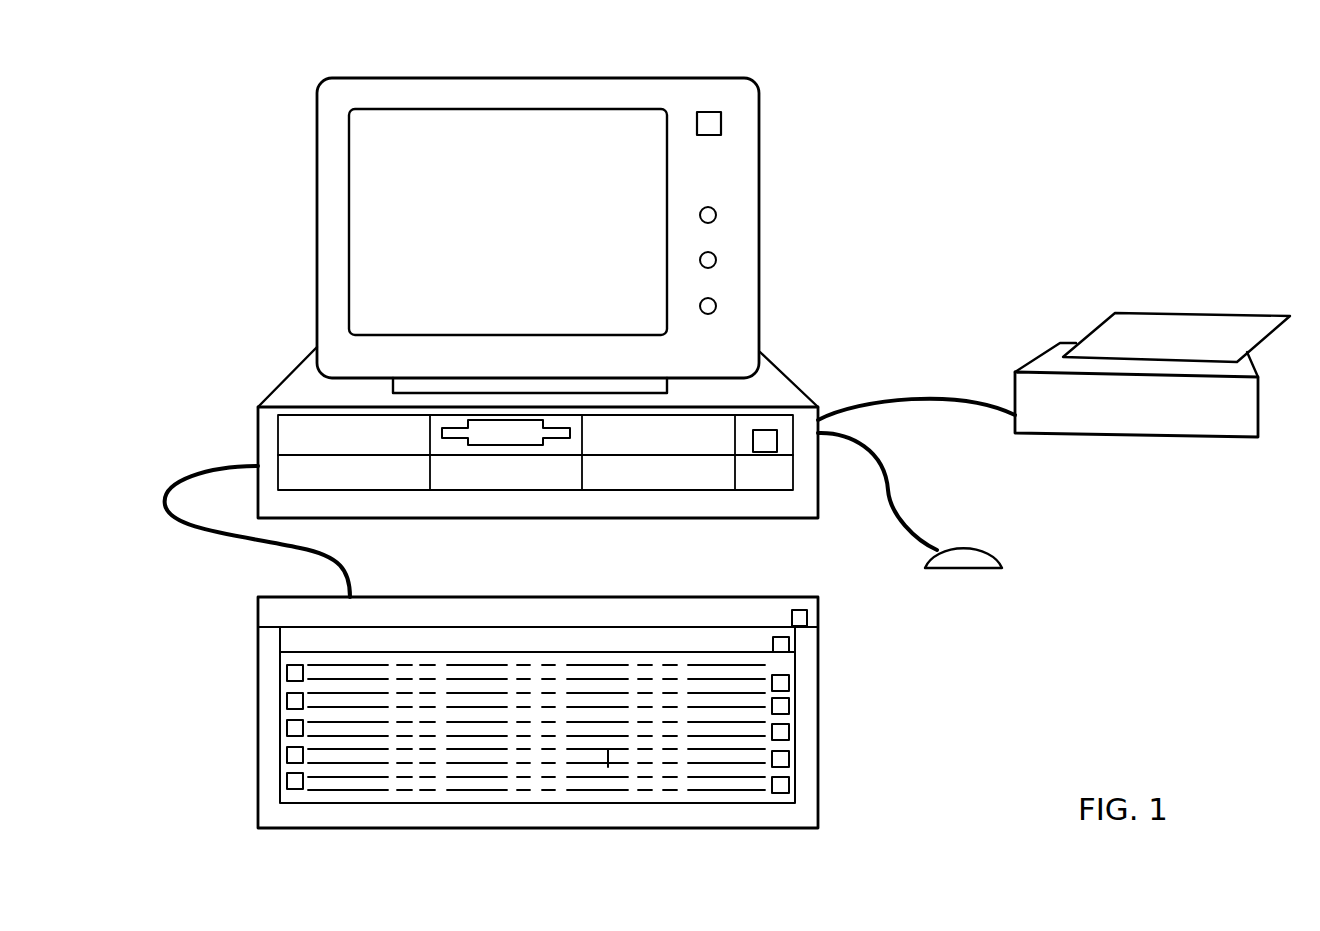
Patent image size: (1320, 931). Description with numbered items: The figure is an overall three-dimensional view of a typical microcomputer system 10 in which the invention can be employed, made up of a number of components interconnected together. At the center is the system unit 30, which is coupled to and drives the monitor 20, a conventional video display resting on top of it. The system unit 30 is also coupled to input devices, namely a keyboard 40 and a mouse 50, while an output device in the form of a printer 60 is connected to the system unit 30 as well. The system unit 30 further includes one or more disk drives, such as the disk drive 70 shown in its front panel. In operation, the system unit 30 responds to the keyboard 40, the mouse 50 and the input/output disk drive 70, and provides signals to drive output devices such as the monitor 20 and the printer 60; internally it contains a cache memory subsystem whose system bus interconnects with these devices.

The microcomputer system 10 is at (867, 130).
The monitor 20 is at (563, 80).
The system unit 30 is at (785, 372).
The keyboard 40 is at (818, 748).
The mouse 50 is at (963, 545).
The printer 60 is at (1117, 437).
The disk drive 70 is at (457, 440).